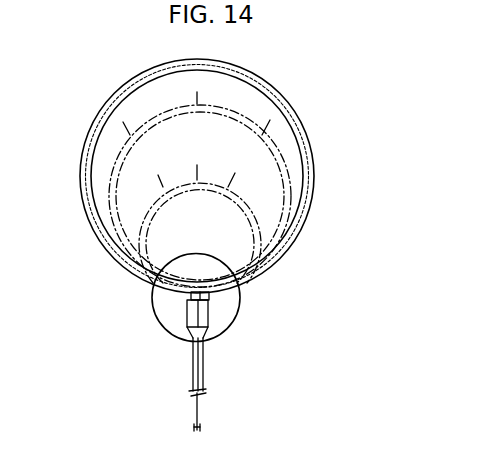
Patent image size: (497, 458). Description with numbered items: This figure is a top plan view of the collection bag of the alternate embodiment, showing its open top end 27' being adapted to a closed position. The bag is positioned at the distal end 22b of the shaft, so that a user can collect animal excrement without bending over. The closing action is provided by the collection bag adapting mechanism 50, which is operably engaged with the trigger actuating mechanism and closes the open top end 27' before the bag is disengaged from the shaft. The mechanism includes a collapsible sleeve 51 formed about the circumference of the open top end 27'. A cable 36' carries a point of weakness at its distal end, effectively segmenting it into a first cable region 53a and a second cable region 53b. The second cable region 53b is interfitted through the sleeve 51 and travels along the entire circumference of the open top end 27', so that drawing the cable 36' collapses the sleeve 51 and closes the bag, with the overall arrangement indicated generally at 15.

The ring 27' is at (213, 176).
The marking lines 51 is at (116, 157).
The enlarged detail circle 50 is at (246, 352).
The nozzle assembly 15 is at (243, 355).
The tube 22b is at (149, 373).
The axis line 36' is at (240, 411).
The ring section 53b is at (77, 287).
The ring section 53a is at (317, 285).